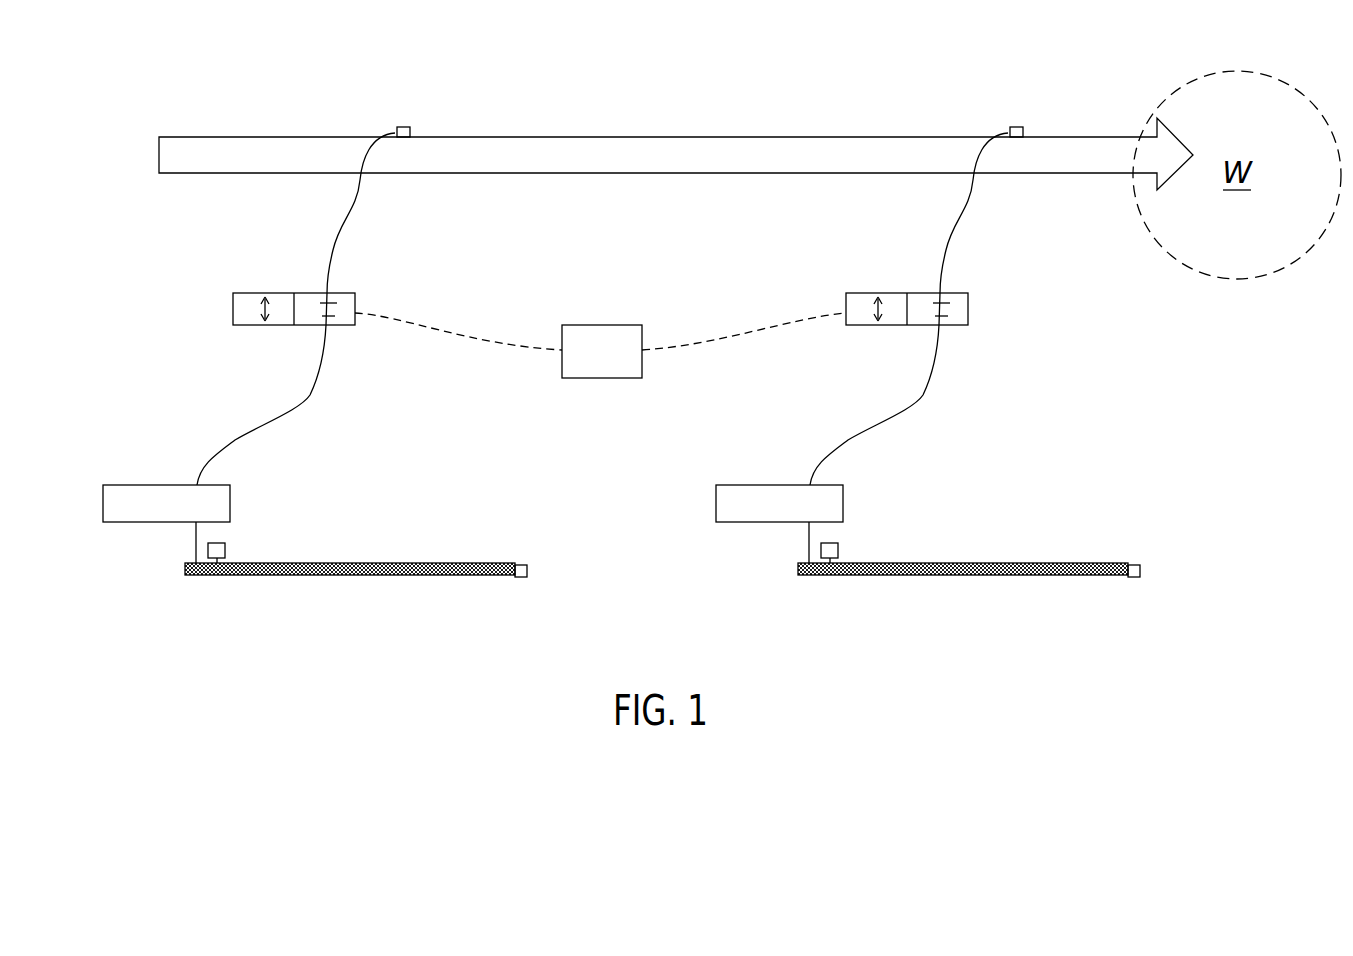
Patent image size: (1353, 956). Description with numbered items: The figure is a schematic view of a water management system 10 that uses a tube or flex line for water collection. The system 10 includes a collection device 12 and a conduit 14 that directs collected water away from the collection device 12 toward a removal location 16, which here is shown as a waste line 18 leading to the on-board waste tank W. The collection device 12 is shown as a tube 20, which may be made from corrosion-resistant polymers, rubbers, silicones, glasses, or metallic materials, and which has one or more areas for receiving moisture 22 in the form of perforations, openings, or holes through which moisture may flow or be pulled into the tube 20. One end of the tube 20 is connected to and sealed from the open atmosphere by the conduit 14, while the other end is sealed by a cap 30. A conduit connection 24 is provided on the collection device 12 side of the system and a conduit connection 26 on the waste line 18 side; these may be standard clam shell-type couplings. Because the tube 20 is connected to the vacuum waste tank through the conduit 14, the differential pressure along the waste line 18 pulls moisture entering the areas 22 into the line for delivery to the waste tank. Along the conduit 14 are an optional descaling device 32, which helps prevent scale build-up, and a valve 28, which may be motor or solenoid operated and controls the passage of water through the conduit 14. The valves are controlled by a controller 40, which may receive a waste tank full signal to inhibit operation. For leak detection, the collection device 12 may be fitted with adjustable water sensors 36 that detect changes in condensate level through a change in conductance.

The water management system 10 is at (556, 101).
The collection device 12 is at (239, 576).
The conduit 14 is at (292, 407).
The removal location 16 is at (129, 155).
The waste line 18 is at (552, 162).
The tube 20 is at (472, 577).
The areas for receiving moisture 22 is at (448, 576).
The conduit connection 24 is at (190, 560).
The conduit connection 26 is at (401, 127).
The valve 28 is at (287, 293).
The cap 30 is at (528, 573).
The descaling device 32 is at (167, 485).
The water sensor 36 is at (227, 552).
The controller 40 is at (588, 362).